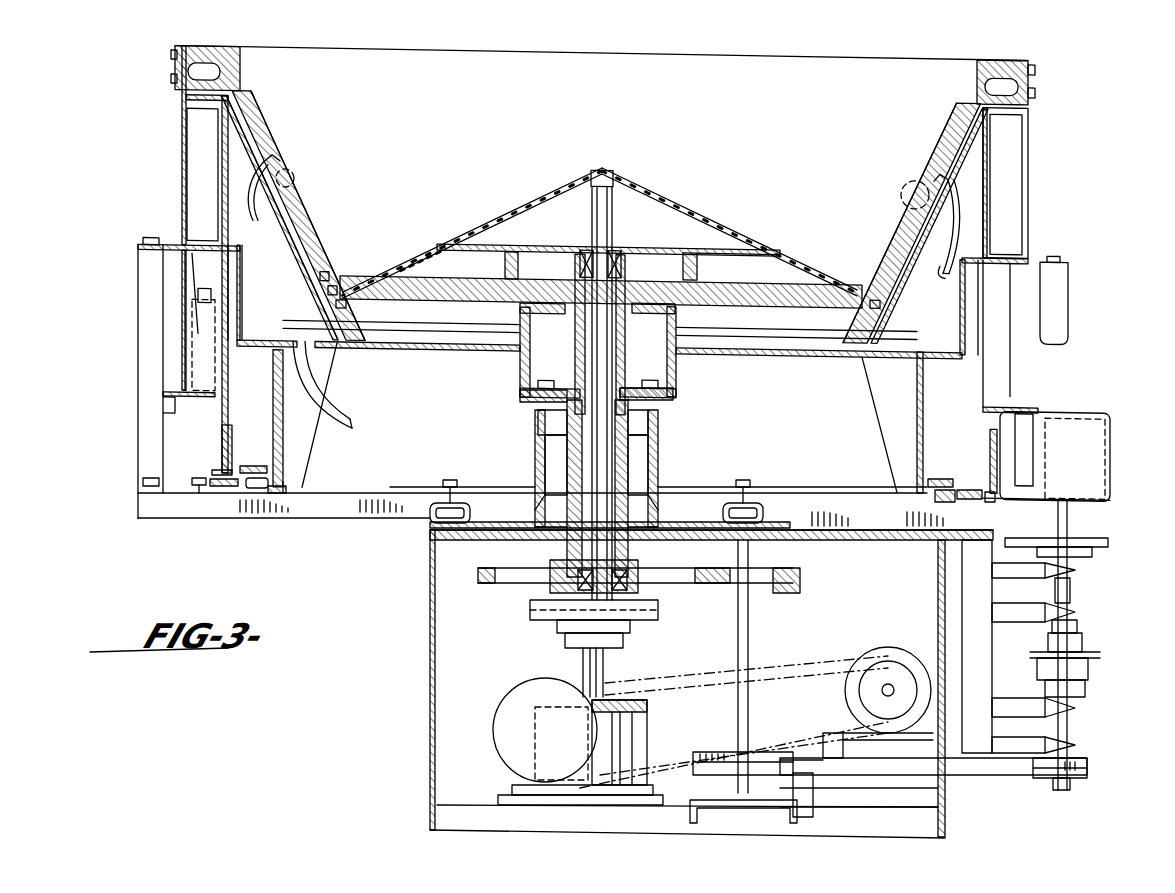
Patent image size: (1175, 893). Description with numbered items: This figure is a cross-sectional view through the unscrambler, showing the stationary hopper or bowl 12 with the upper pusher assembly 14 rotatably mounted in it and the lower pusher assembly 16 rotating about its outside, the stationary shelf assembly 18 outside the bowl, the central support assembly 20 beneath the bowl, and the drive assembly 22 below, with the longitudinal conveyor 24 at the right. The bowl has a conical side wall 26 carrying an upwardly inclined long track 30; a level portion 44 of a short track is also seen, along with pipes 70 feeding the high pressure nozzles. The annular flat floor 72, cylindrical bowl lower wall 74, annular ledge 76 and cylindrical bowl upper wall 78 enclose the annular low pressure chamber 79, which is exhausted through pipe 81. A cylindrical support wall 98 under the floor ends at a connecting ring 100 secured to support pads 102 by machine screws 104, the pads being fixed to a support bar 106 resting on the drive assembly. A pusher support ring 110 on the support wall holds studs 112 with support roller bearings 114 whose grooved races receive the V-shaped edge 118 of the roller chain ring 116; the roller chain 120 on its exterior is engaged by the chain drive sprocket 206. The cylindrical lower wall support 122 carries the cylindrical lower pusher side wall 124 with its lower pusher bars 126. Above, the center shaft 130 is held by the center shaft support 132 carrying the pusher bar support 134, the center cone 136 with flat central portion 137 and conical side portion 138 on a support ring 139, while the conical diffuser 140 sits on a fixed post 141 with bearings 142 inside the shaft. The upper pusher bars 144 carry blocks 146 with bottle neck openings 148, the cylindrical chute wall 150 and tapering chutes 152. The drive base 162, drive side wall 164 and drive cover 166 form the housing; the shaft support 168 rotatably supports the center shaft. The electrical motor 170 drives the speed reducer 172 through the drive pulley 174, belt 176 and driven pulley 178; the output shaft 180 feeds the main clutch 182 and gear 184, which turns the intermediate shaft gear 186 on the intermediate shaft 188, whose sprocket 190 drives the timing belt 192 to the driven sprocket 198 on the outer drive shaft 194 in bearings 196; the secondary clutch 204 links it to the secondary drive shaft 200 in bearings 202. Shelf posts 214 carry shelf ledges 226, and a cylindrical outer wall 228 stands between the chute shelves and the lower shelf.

The stationary hopper or bowl 12 is at (258, 128).
The upper pusher assembly 14 is at (332, 229).
The lower pusher assembly 16 is at (210, 435).
The stationary shelf assembly 18 is at (136, 313).
The central support assembly 20 is at (413, 527).
The drive assembly 22 is at (428, 735).
The longitudinal conveyor 24 is at (1032, 395).
The conical side wall 26 is at (340, 237).
The upwardly inclined long track 30 is at (305, 210).
The level portion 44 is at (322, 293).
The pipes 70 is at (250, 190).
The annular flat floor 72 is at (263, 357).
The cylindrical bowl lower wall 74 is at (958, 313).
The annular ledge 76 is at (967, 257).
The cylindrical bowl upper wall 78 is at (987, 157).
The annular low pressure chamber 79 is at (237, 160).
The pipe 81 is at (330, 405).
The cylindrical support wall 98 is at (283, 440).
The connecting ring 100 is at (287, 487).
The support pads 102 is at (422, 487).
The machine screws 104 is at (452, 477).
The support bar 106 is at (468, 510).
The pusher support ring 110 is at (920, 463).
The studs 112 is at (947, 477).
The support roller bearing 114 is at (250, 487).
The roller chain ring 116 is at (980, 505).
The V-shaped edge 118 is at (983, 470).
The roller chain 120 is at (200, 490).
The cylindrical lower wall support 122 is at (220, 462).
The cylindrical lower pusher side wall 124 is at (232, 395).
The lower pusher bars 126 is at (200, 268).
The center shaft 130 is at (560, 362).
The center shaft support 132 is at (677, 320).
The pusher bar support 134 is at (458, 280).
The center cone 136 is at (723, 243).
The flat central portion 137 is at (672, 247).
The conical side portion 138 is at (402, 252).
The support ring 139 is at (497, 250).
The conical diffuser 140 is at (565, 183).
The post 141 is at (612, 196).
The bearings 142 is at (612, 250).
The upper pusher bars 144 is at (333, 258).
The block 146 is at (190, 52).
The bottle neck opening 148 is at (200, 78).
The cylindrical chute wall 150 is at (1017, 135).
The tapering chutes 152 is at (1013, 182).
The drive base 162 is at (535, 820).
The drive side wall 164 is at (428, 678).
The drive cover 166 is at (455, 538).
The shaft support 168 is at (657, 460).
The electrical motor 170 is at (908, 647).
The speed reducer 172 is at (637, 728).
The drive pulley 174 is at (867, 690).
The belt 176 is at (713, 667).
The driven pulley 178 is at (510, 708).
The output shaft 180 is at (607, 662).
The main clutch 182 is at (562, 640).
The gear 184 is at (488, 583).
The intermediate shaft gear 186 is at (800, 562).
The intermediate shaft 188 is at (757, 623).
The sprocket 190 is at (705, 775).
The timing belt 192 is at (993, 770).
The outer drive shaft 194 is at (1068, 728).
The bearings 196 is at (1073, 710).
The driven sprocket 198 is at (1083, 770).
The secondary drive shaft 200 is at (1068, 592).
The bearings 202 is at (1073, 573).
The secondary clutch 204 is at (1085, 667).
The chain drive sprocket 206 is at (1085, 497).
The shelf posts 214 is at (1057, 280).
The shelf ledges 226 is at (167, 405).
The cylindrical outer wall 228 is at (183, 355).